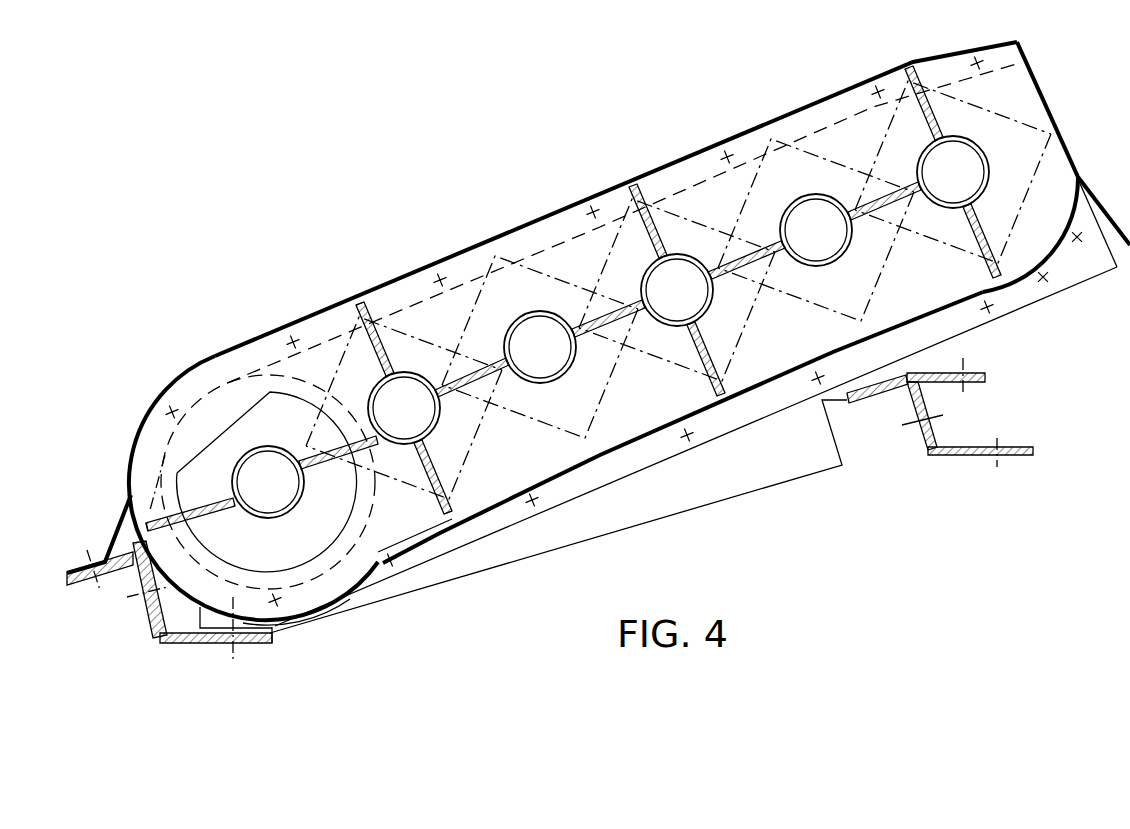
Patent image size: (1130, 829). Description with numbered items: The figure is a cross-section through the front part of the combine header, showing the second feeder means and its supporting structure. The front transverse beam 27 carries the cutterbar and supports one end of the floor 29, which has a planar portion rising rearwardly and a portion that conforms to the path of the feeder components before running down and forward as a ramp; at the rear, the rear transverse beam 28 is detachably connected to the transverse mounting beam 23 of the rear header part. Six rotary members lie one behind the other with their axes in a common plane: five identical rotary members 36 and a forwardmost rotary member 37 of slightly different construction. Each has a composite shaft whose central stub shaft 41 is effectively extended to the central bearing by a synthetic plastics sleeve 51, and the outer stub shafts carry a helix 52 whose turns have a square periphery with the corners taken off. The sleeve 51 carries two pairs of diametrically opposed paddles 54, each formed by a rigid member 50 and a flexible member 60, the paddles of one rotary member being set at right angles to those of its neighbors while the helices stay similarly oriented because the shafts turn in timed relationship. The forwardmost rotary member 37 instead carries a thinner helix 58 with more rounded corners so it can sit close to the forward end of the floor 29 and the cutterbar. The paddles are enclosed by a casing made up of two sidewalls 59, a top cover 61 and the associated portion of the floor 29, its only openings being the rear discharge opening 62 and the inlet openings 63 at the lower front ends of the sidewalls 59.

The transverse mounting beam 23 is at (980, 456).
The front transverse beam 27 is at (260, 640).
The rear transverse beam 28 is at (907, 412).
The floor 29 is at (665, 440).
The rotary member 36 is at (538, 433).
The forwardmost rotary member 37 is at (200, 547).
The central stub shaft 41 is at (610, 327).
The rigid member 50 is at (390, 370).
The sleeve 51 is at (268, 446).
The helix 52 is at (463, 337).
The paddle 54 is at (360, 313).
The helix 58 is at (293, 407).
The sidewall 59 is at (696, 446).
The flexible member 60 is at (366, 300).
The top cover 61 is at (567, 210).
The rear discharge opening 62 is at (1052, 95).
The inlet opening 63 is at (385, 556).